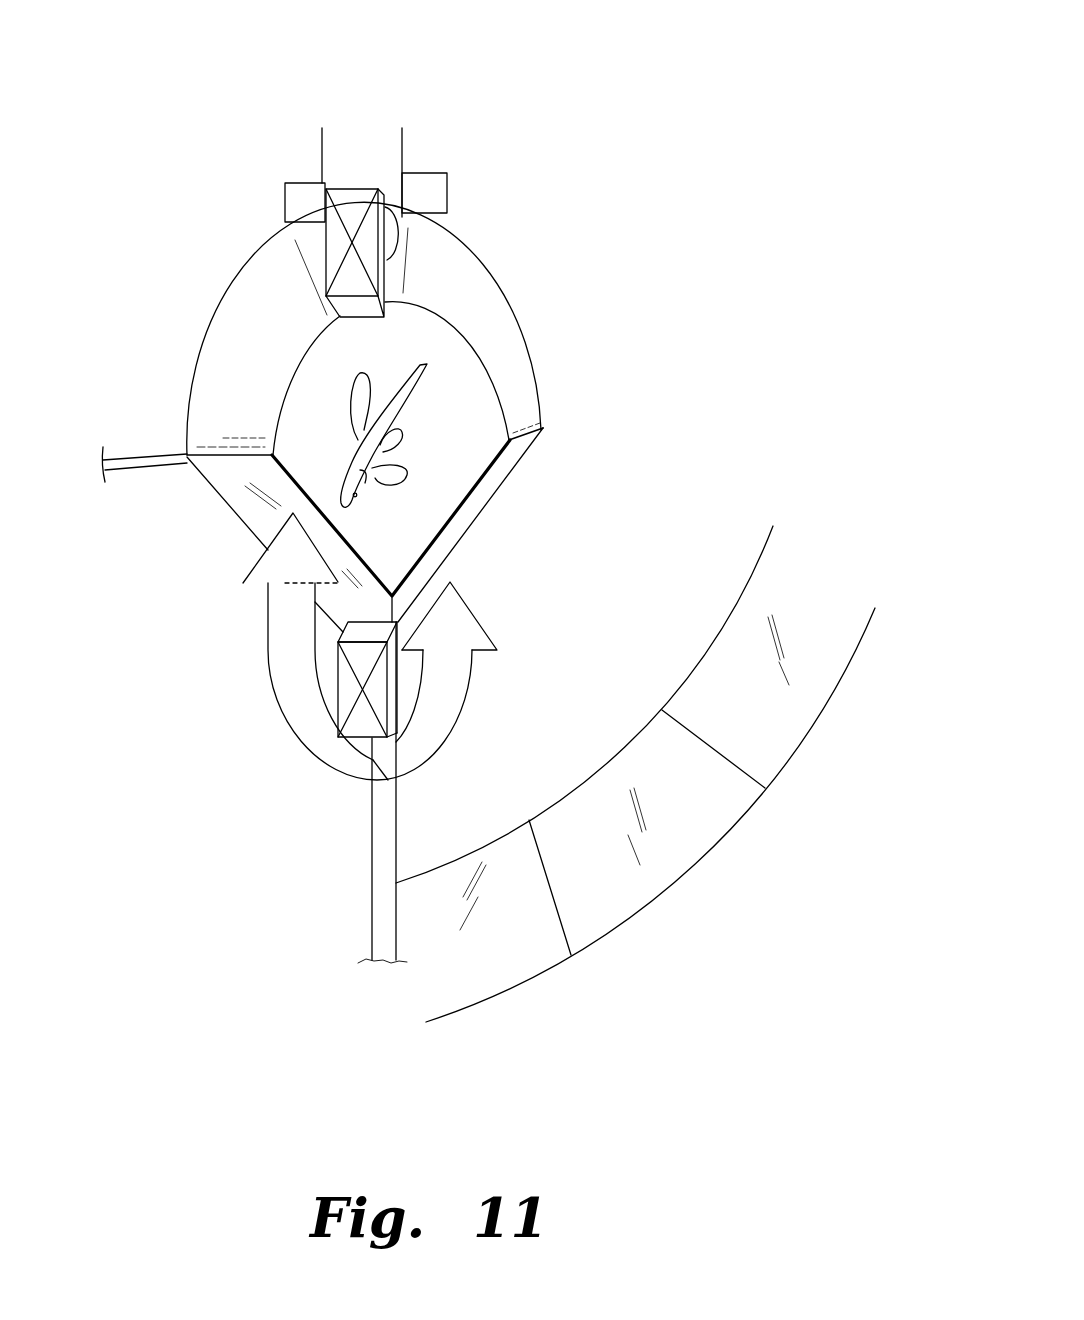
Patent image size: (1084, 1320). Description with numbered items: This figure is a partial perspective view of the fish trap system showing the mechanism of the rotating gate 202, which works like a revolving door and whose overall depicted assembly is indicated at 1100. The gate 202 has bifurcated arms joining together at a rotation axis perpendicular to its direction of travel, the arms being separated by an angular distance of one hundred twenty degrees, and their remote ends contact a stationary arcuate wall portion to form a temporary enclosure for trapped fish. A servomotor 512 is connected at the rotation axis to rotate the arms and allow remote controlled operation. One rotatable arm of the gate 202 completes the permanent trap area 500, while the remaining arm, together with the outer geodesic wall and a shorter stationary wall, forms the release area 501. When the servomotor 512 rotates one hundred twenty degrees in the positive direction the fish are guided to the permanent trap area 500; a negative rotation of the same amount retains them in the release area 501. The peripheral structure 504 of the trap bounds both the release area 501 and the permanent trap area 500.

The bearing and blade seat assembly 1100 is at (617, 208).
The rotating gate 202 is at (358, 552).
The permanent trap area 500 is at (256, 800).
The release area 501 is at (622, 568).
The peripheral structure 504 is at (711, 851).
The servomotor 512 is at (367, 703).